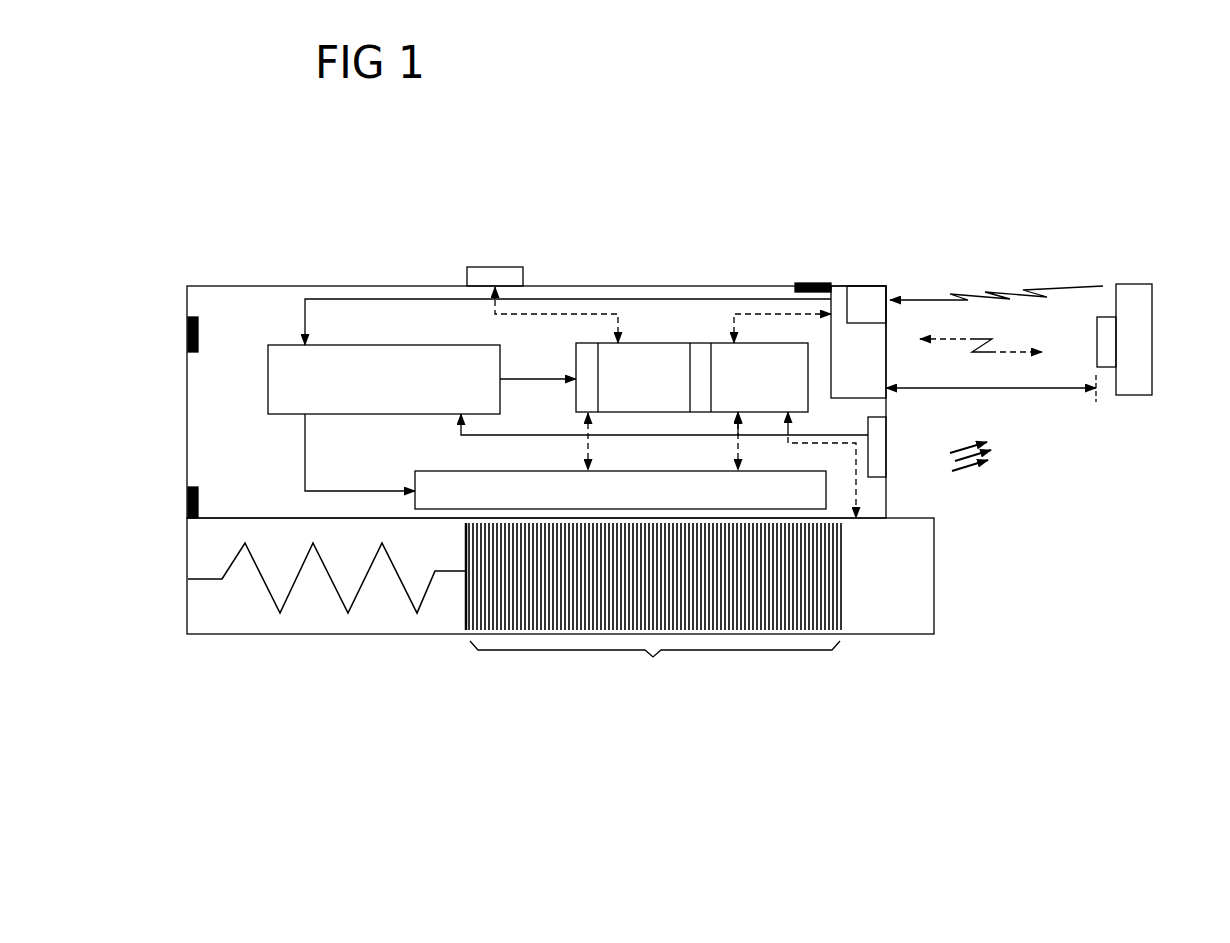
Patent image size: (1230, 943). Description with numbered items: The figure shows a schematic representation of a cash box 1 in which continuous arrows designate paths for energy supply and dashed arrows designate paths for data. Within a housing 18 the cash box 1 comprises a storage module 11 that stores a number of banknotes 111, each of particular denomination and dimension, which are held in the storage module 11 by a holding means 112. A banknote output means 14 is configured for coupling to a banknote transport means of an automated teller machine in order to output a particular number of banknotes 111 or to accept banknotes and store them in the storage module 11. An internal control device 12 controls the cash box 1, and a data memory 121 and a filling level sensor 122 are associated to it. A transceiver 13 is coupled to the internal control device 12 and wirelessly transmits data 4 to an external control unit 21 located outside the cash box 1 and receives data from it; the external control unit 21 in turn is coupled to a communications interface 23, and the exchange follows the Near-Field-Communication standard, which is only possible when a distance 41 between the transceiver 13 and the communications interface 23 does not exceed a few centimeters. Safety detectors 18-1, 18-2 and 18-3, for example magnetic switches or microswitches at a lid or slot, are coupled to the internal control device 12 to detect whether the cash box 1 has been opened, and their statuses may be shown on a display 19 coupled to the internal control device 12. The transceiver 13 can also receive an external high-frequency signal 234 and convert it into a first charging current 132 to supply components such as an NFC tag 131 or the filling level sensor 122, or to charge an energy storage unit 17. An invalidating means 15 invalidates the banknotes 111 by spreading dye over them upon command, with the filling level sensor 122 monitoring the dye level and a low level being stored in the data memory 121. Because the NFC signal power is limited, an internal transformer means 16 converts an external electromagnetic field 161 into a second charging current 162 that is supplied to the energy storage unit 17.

The cash box 1 is at (995, 181).
The housing 18 is at (243, 285).
The safety detector 18-1 is at (187, 318).
The safety detector 18-2 is at (189, 504).
The safety detector 18-3 is at (806, 285).
The storage module 11 is at (213, 551).
The banknote output means 14 is at (928, 594).
The holding means 112 is at (280, 612).
The banknotes 111 is at (653, 605).
The energy storage unit 17 is at (268, 382).
The internal control device 12 is at (646, 355).
The filling level sensor 122 is at (578, 347).
The data memory 121 is at (701, 352).
The invalidating means 15 is at (435, 494).
The transceiver 13 is at (858, 357).
The NFC tag 131 is at (866, 305).
The first charging current 132 is at (392, 298).
The display 19 is at (484, 267).
The internal transformer means 16 is at (877, 445).
The second charging current 162 is at (543, 434).
The external electromagnetic field 161 is at (983, 463).
The external control unit 21 is at (1152, 307).
The communications interface 23 is at (1112, 358).
The distance 41 is at (1018, 392).
The data 4 is at (1008, 352).
The external high-frequency signal 234 is at (998, 288).